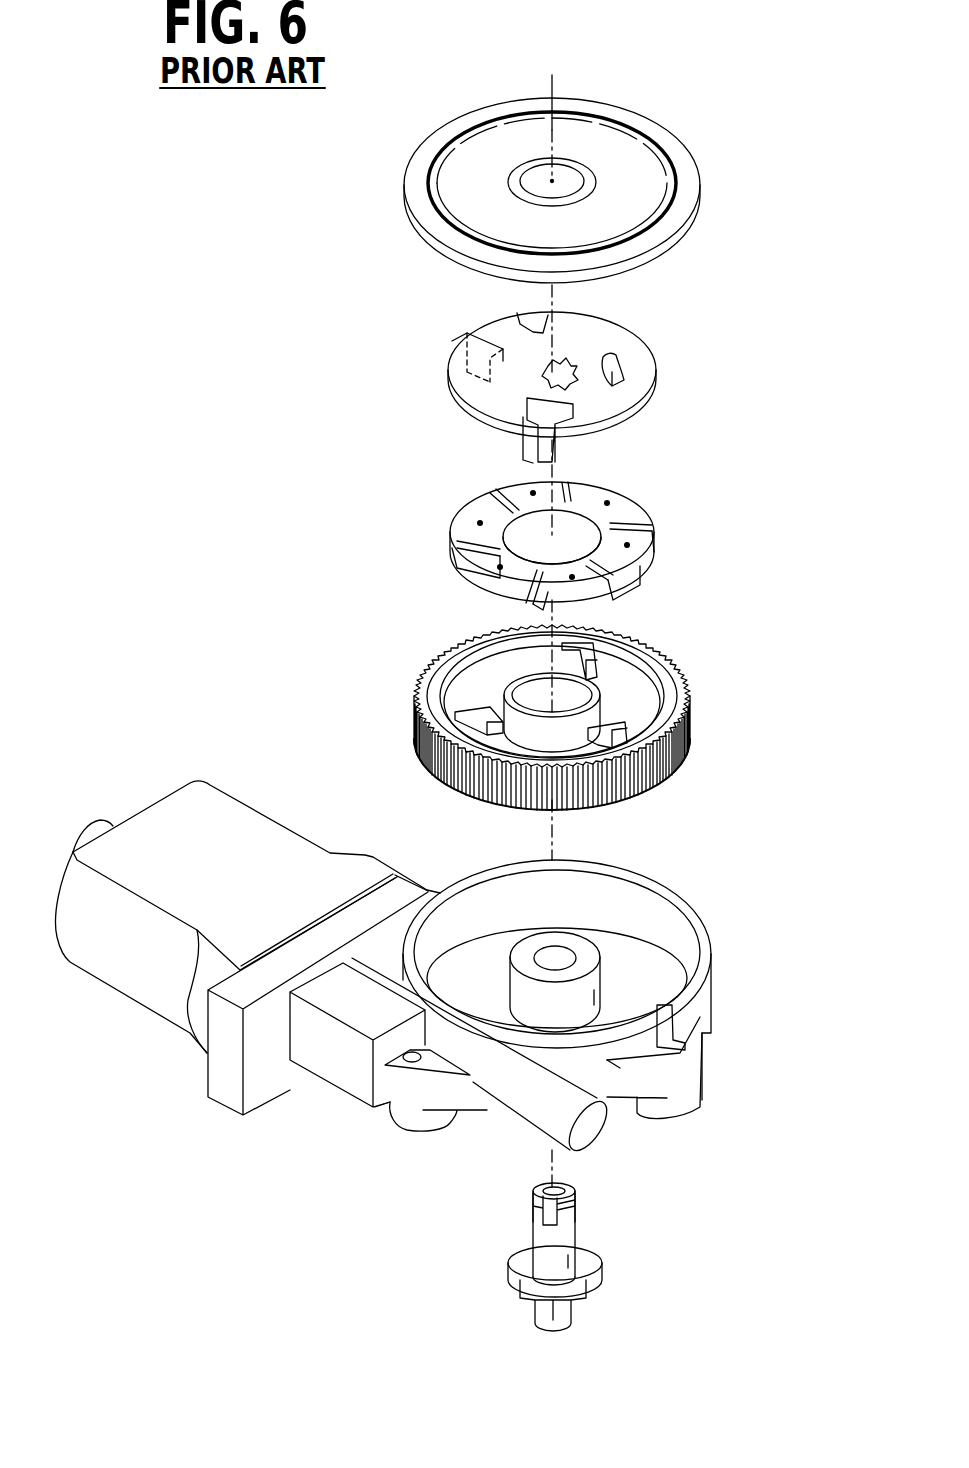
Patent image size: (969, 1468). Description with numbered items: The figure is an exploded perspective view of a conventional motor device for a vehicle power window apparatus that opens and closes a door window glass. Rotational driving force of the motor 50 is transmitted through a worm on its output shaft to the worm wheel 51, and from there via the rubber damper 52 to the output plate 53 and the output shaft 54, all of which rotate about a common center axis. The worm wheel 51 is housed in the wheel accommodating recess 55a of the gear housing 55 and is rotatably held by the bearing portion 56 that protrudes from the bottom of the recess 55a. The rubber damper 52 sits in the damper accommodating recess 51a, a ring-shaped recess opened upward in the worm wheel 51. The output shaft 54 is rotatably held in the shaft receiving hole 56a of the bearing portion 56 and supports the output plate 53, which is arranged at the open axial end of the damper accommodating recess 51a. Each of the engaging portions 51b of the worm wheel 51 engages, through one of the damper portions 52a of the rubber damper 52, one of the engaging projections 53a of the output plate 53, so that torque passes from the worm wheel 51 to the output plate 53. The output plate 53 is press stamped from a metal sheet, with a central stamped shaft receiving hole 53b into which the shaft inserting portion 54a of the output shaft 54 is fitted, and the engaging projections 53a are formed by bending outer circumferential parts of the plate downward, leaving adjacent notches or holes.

The motor 50 is at (165, 825).
The worm wheel 51 is at (575, 711).
The damper accommodating recess 51a is at (625, 700).
The engaging portions 51b is at (597, 665).
The rubber damper 52 is at (592, 523).
The damper portions 52a is at (472, 511).
The output plate 53 is at (580, 367).
The engaging projections 53a is at (447, 360).
The shaft receiving hole 53b is at (560, 361).
The output shaft 54 is at (577, 1235).
The shaft inserting portion 54a is at (538, 1220).
The gear housing 55 is at (337, 1078).
The wheel accommodating recess 55a is at (678, 928).
The bearing portion 56 is at (596, 984).
The shaft receiving hole 56a is at (555, 955).